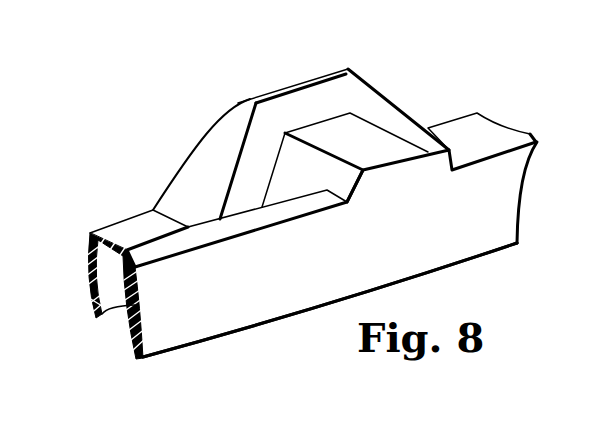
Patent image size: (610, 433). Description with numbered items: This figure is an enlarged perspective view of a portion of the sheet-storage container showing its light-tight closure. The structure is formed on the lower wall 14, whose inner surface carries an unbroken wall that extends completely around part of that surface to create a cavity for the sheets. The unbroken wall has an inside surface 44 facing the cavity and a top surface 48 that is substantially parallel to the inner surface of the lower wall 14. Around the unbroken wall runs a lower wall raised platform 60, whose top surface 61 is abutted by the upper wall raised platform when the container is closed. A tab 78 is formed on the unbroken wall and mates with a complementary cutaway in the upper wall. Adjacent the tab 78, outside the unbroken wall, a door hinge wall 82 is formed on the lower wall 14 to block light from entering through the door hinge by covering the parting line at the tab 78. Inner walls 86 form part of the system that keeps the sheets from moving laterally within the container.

The lower wall 14 is at (398, 101).
The inside surface 44 is at (455, 235).
The top surface 48 is at (485, 150).
The lower wall raised platform 60 is at (134, 219).
The top surface 61 is at (106, 226).
The tab 78 is at (312, 168).
The door hinge wall 82 is at (217, 145).
The inner walls 86 is at (233, 303).